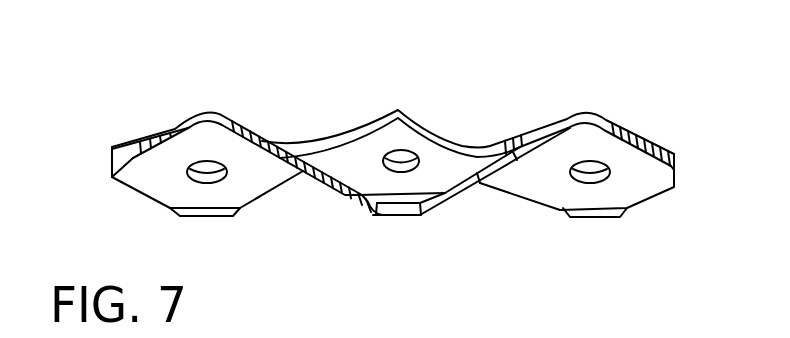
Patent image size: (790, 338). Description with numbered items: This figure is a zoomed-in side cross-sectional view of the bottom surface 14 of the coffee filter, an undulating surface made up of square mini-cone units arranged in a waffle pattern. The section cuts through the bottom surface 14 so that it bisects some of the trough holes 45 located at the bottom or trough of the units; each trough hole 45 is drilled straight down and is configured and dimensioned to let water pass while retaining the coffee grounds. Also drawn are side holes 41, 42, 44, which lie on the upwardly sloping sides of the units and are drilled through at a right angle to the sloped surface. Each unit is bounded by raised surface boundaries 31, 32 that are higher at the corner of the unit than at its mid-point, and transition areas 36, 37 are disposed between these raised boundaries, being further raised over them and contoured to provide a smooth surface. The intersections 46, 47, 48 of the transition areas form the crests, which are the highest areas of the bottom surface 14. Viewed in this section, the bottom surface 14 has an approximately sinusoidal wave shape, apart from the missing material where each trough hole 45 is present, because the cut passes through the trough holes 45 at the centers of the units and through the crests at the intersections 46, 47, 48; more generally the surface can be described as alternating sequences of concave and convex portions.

The bottom surface 14 is at (478, 184).
The raised surface boundary 31 is at (457, 144).
The raised surface boundary 32 is at (320, 141).
The transition area 36 is at (483, 144).
The transition area 37 is at (355, 135).
The side hole 41 is at (410, 151).
The side hole 42 is at (295, 165).
The side hole 44 is at (491, 178).
The trough hole 45 is at (383, 216).
The intersection 46 is at (588, 113).
The intersection 47 is at (398, 112).
The intersection 48 is at (207, 112).